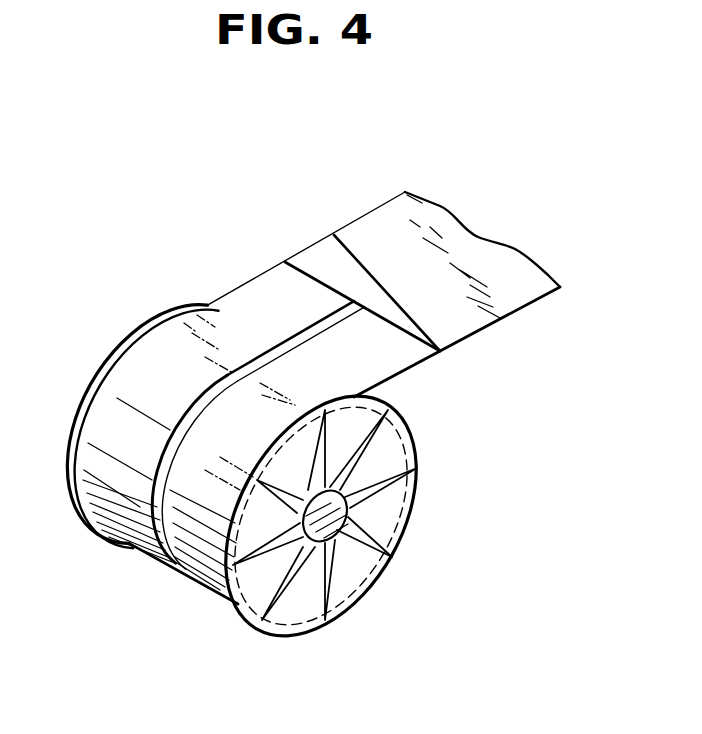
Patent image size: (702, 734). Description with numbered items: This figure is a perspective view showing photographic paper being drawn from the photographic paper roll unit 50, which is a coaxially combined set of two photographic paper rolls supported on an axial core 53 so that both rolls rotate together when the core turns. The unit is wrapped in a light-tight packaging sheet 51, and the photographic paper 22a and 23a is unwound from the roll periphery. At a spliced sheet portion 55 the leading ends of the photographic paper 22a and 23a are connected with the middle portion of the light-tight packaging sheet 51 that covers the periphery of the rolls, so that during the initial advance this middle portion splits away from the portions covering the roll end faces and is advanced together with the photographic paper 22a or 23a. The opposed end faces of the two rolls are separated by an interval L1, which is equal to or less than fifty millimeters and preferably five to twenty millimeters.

The photographic paper roll unit 50 is at (97, 312).
The photographic paper 22a is at (219, 312).
The photographic paper 23a is at (402, 357).
The spliced sheet portion 55 is at (311, 257).
The light-tight packaging sheet 51 is at (379, 214).
The axial core 53 is at (300, 512).
The interval L1 is at (277, 303).